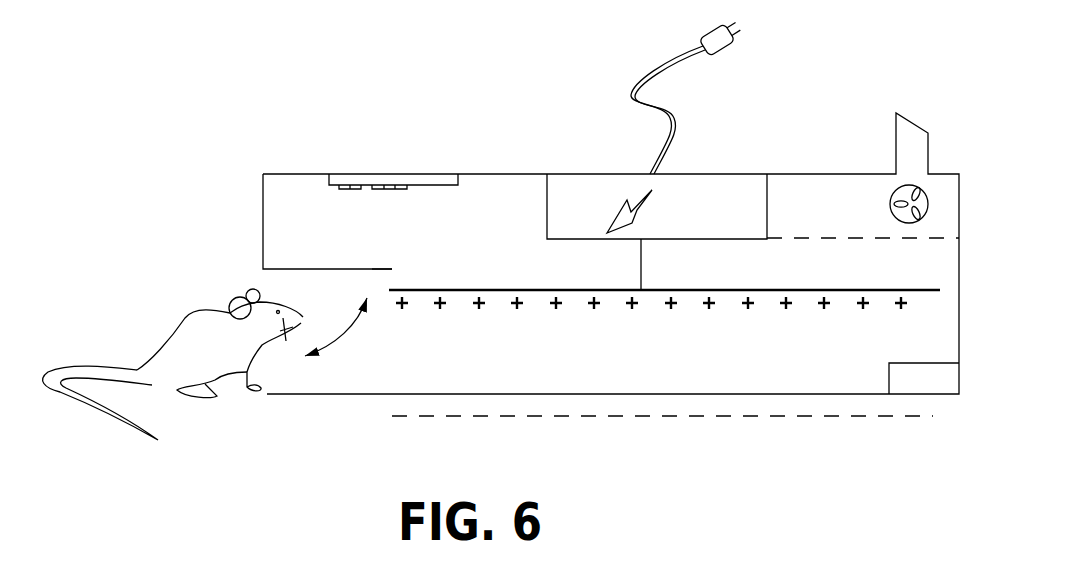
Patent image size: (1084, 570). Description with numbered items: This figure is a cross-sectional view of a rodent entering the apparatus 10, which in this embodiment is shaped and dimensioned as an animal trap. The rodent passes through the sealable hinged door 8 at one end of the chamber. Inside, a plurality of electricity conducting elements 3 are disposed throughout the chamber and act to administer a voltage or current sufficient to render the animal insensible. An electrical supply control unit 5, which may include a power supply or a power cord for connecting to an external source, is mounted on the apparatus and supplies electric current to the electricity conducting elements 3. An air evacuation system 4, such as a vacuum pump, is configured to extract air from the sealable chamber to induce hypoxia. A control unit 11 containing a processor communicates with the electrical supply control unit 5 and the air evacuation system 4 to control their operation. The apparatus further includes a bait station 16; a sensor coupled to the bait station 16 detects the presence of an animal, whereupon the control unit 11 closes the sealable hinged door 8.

The apparatus 10 is at (292, 117).
The control unit 11 is at (313, 182).
The sealable hinged door 8 is at (372, 266).
The electricity conducting elements 3 is at (509, 282).
The electrical supply control unit 5 is at (607, 172).
The air evacuation system 4 is at (852, 173).
The bait station 16 is at (921, 392).